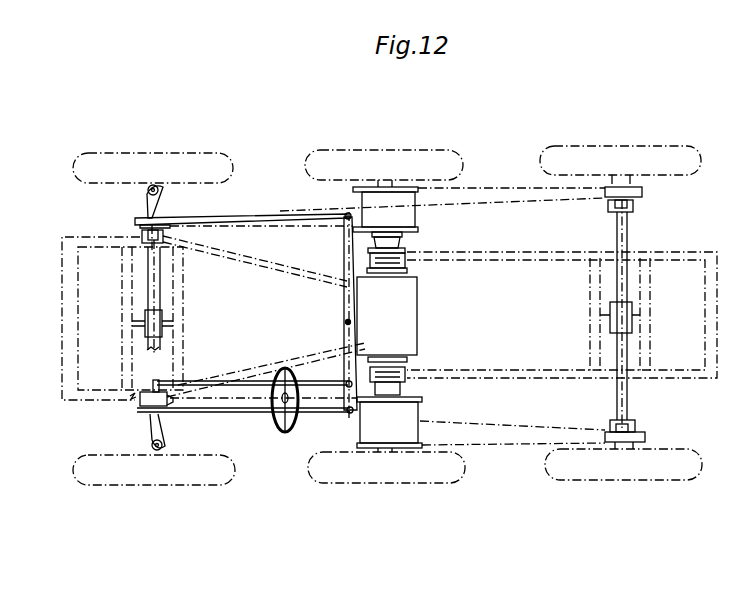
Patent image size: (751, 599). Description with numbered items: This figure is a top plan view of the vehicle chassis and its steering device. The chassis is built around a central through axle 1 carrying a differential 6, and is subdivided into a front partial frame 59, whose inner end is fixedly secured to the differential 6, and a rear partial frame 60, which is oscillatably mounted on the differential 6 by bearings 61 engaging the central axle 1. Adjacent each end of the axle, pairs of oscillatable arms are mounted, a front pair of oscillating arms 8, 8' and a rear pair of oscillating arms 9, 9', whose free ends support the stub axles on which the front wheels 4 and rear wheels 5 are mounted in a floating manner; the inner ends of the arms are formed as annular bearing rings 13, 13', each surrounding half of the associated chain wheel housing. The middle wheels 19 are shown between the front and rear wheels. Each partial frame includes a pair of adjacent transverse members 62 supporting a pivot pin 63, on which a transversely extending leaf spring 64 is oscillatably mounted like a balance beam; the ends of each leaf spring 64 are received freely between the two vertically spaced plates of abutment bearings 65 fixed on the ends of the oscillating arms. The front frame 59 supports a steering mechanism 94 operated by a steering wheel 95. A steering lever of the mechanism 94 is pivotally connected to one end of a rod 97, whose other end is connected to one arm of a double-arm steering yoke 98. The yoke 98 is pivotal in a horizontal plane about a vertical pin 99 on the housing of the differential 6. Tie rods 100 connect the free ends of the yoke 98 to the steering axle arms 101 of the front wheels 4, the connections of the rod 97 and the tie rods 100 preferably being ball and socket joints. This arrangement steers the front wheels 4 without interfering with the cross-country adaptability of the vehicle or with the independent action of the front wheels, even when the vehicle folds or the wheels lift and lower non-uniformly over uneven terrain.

The central through axle 1 is at (396, 246).
The front wheels 4 is at (150, 160).
The rear wheels 5 is at (620, 160).
The differential 6 is at (418, 326).
The front oscillating arm 8 is at (261, 202).
The front oscillating arm 8' is at (263, 426).
The rear oscillating arm 9 is at (442, 184).
The rear oscillating arm 9' is at (512, 445).
The bearing ring 13 is at (370, 217).
The bearing ring 13' is at (412, 415).
The middle wheels 19 is at (432, 156).
The front partial frame 59 is at (273, 270).
The rear partial frame 60 is at (553, 258).
The bearings 61 is at (406, 268).
The transverse members 62 is at (122, 283).
The pivot pin 63 is at (128, 325).
The leaf spring 64 is at (155, 264).
The abutment bearing 65 is at (140, 233).
The steering mechanism 94 is at (140, 401).
The steering wheel 95 is at (283, 368).
The rod 97 is at (211, 380).
The double-arm steering yoke 98 is at (348, 306).
The vertical pin 99 is at (356, 322).
The tie rods 100 is at (236, 218).
The steering axle arms 101 is at (145, 204).